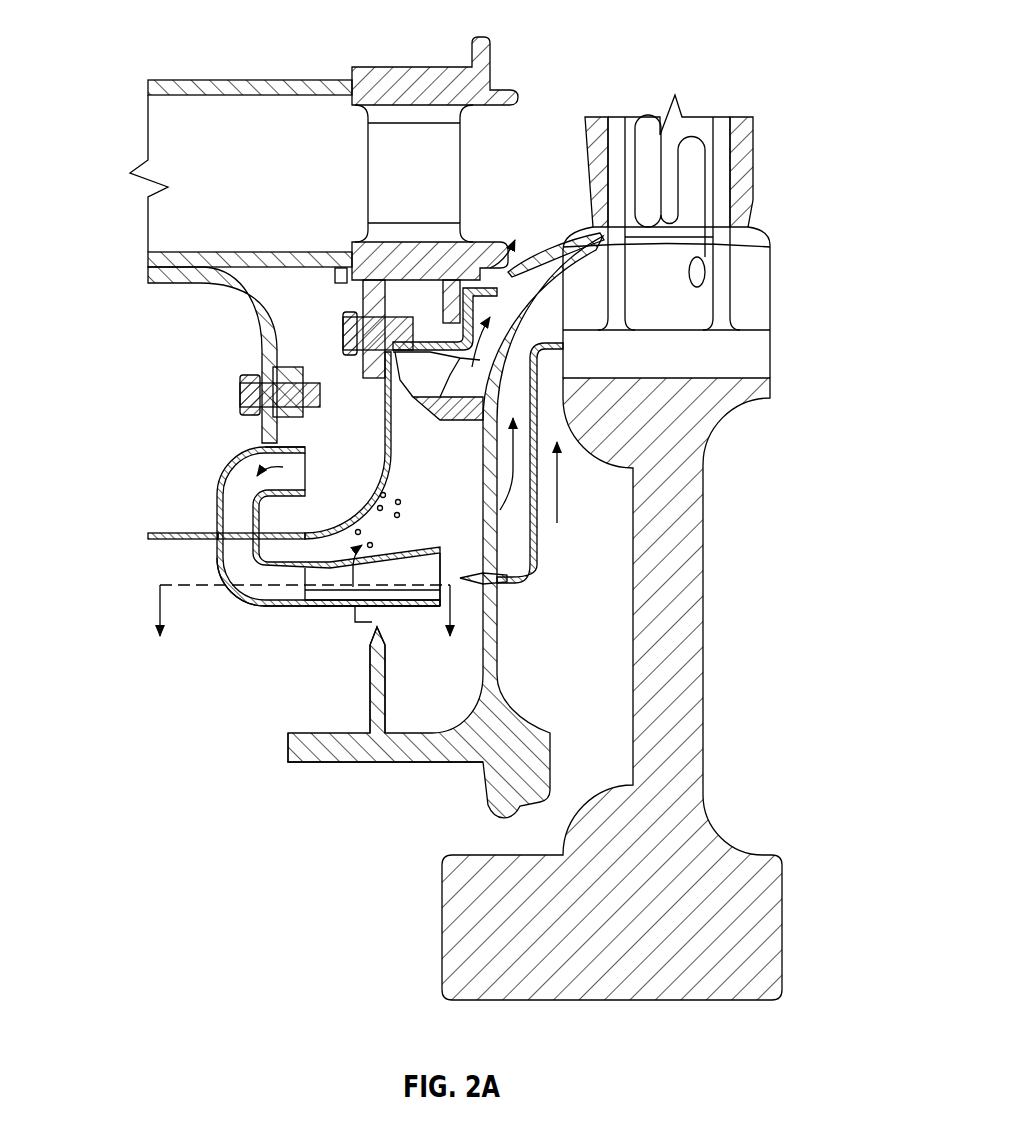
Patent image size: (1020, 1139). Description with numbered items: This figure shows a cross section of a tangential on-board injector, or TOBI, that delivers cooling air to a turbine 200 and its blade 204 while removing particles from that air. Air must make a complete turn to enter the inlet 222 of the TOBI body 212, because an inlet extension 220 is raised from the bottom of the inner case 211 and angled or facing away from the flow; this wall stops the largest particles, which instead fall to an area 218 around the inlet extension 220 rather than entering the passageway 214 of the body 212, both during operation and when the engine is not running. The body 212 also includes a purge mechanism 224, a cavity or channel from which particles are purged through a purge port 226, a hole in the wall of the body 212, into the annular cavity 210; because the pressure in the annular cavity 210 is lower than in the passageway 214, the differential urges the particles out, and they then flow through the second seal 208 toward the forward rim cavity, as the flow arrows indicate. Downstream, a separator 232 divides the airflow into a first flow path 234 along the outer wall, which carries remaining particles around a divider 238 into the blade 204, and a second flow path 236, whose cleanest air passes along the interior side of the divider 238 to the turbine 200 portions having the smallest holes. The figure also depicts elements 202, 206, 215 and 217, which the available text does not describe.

The turbine 200 is at (463, 502).
The rotor disk 202 is at (790, 918).
The blade 204 is at (752, 122).
The support bracket 206 is at (370, 695).
The second seal 208 is at (343, 343).
The annular cavity 210 is at (405, 493).
The inner case 211 is at (148, 534).
The body 212 is at (290, 606).
The passageway 214 is at (236, 582).
The feed tube 215 is at (234, 527).
The stationary wall 217 is at (447, 594).
The area 218 is at (288, 511).
The inlet extension 220 is at (256, 462).
The inlet 222 is at (306, 452).
The purge mechanism 224 is at (328, 607).
The purge port 226 is at (307, 662).
The separator 232 is at (380, 520).
The first flow path 234 is at (428, 594).
The second flow path 236 is at (438, 552).
The divider 238 is at (503, 592).